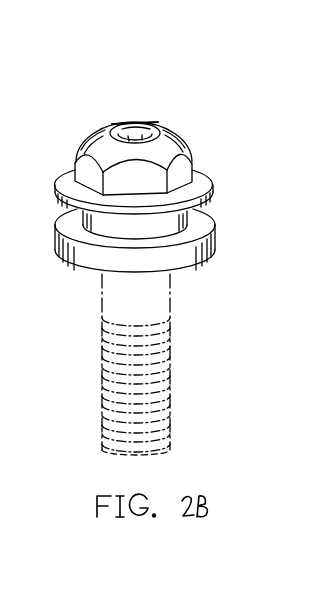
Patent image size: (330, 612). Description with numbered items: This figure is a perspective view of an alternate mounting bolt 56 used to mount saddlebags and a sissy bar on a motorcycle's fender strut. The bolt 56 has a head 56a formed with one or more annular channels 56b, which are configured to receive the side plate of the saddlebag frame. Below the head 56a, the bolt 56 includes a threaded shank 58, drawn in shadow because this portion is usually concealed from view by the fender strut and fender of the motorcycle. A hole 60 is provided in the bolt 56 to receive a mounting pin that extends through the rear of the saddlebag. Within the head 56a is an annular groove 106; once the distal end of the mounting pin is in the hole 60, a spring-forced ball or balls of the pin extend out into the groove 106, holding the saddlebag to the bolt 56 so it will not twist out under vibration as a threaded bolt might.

The annular groove 106 is at (121, 124).
The hole 60 is at (150, 123).
The bolt 56 is at (212, 177).
The annular channel 56b is at (203, 214).
The head 56a is at (217, 246).
The threaded shank 58 is at (171, 372).